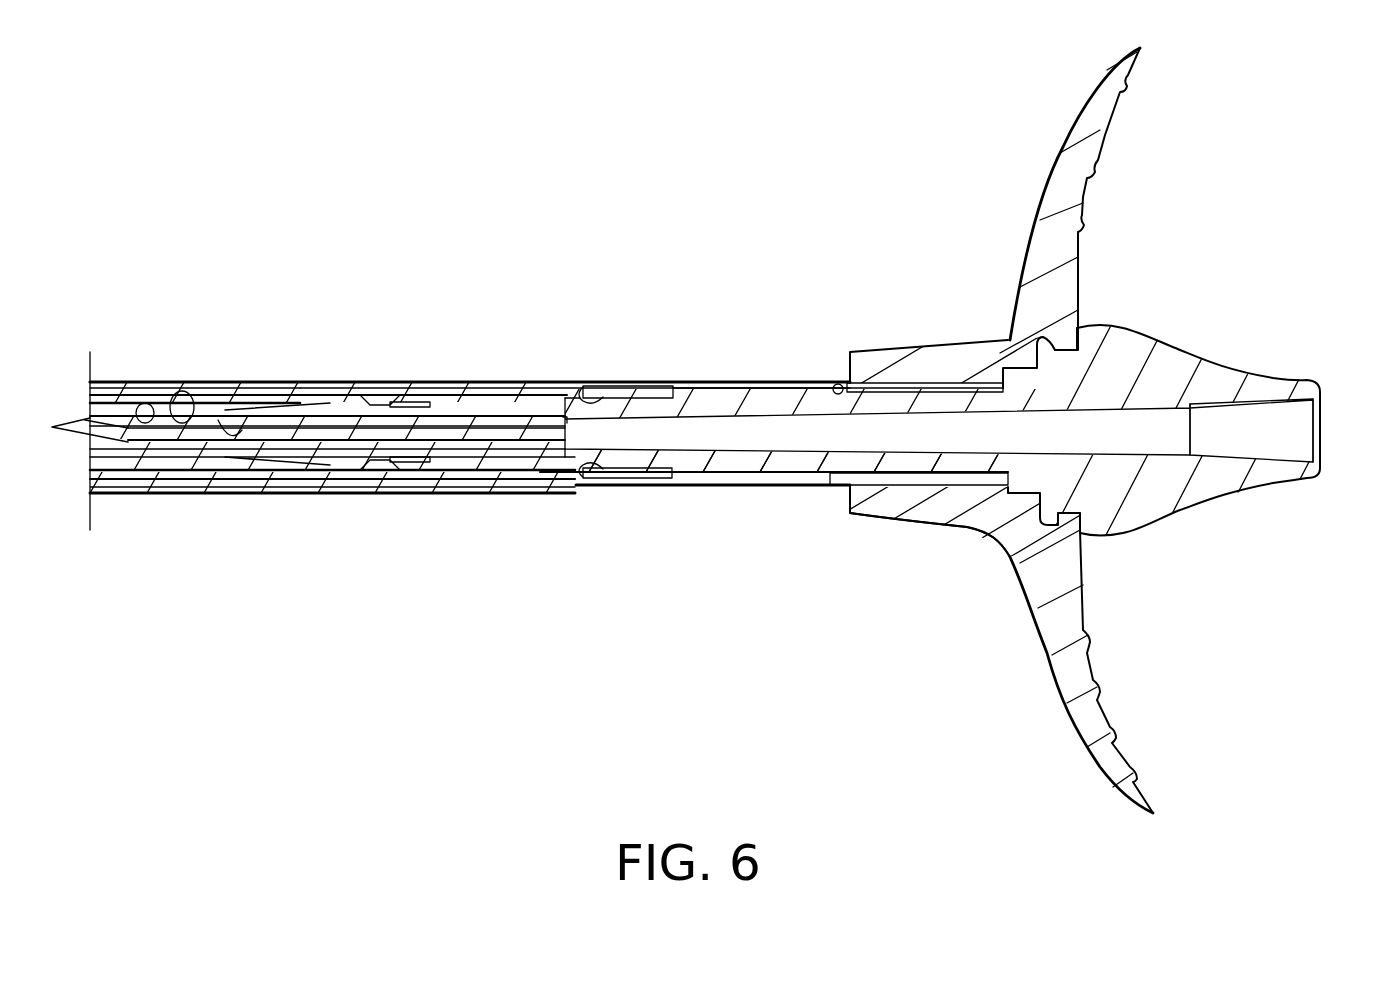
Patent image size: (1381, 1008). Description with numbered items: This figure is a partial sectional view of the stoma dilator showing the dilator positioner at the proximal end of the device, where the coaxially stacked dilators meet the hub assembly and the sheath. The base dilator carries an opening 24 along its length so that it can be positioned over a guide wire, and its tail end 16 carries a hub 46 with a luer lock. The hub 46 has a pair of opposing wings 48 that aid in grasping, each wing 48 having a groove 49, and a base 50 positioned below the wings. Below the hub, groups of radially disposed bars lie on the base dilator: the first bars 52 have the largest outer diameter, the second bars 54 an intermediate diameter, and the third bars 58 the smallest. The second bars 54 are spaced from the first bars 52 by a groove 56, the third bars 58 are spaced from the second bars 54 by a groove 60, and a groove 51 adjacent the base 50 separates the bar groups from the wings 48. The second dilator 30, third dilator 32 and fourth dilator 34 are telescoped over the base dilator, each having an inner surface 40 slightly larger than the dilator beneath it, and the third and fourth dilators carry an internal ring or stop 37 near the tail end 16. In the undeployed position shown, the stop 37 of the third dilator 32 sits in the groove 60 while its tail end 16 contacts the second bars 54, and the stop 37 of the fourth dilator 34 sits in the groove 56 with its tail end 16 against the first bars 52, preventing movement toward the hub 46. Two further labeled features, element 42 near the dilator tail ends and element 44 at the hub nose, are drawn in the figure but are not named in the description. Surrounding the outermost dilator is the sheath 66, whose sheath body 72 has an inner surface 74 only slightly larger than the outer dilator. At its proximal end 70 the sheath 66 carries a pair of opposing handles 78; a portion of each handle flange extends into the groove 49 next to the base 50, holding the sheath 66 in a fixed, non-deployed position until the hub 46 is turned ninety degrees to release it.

The tail end 16 is at (227, 400).
The second dilator 30 is at (113, 423).
The opening 24 is at (523, 427).
The second bars 54 is at (517, 465).
The third dilator 32 is at (275, 400).
The inner surface 40 is at (200, 410).
The loop 42 is at (250, 417).
The sheath body 72 is at (240, 482).
The groove 60 is at (395, 388).
The third bars 58 is at (342, 462).
The fourth dilator 34 is at (530, 395).
The internal ring or stop 37 is at (380, 405).
The sheath 66 is at (700, 378).
The groove 56 is at (637, 475).
The first bars 52 is at (752, 460).
The inner surface 74 is at (850, 380).
The proximal end 70 is at (988, 340).
The groove 51 is at (930, 480).
The hub 46 is at (1157, 337).
The bore 44 is at (1300, 425).
The wings 48 is at (1113, 328).
The base 50 is at (1043, 347).
The groove 49 is at (1062, 333).
The handles 78 is at (1083, 127).